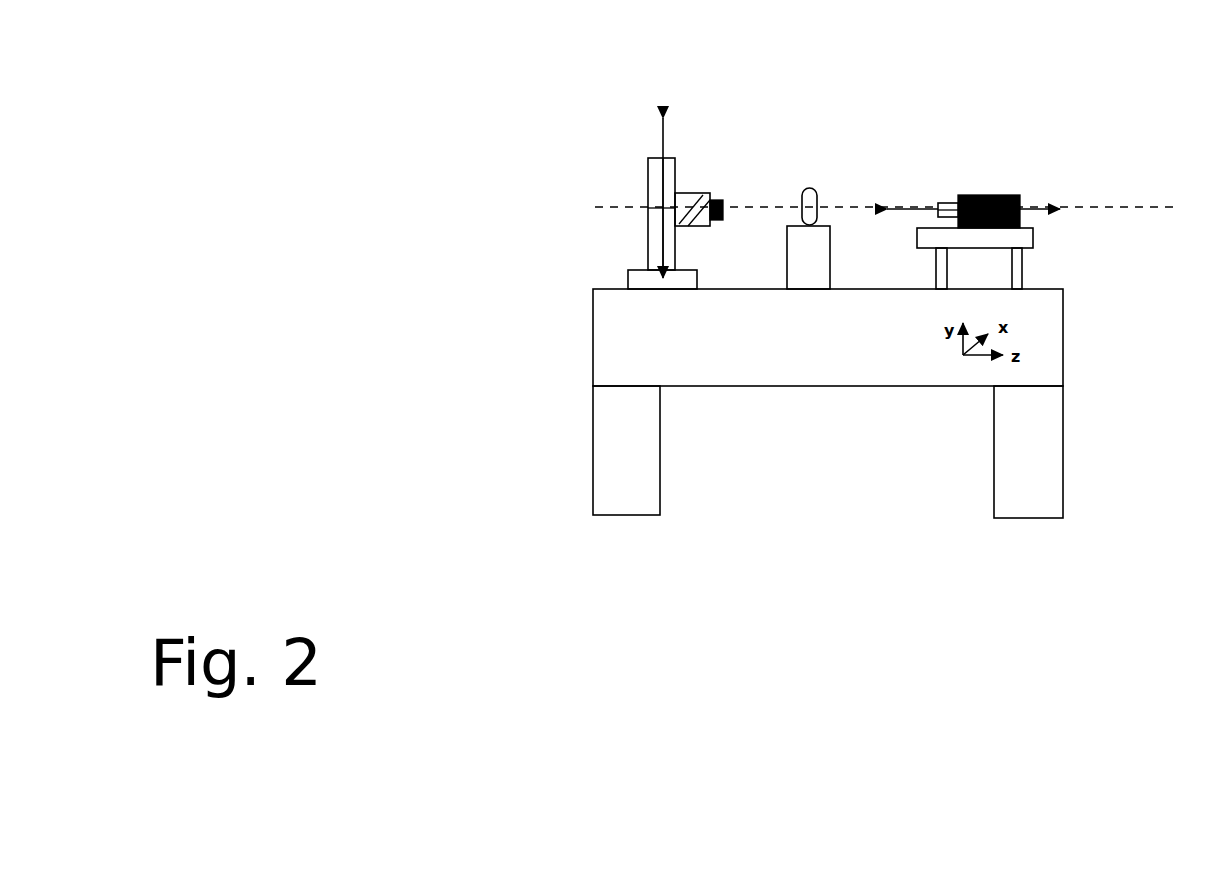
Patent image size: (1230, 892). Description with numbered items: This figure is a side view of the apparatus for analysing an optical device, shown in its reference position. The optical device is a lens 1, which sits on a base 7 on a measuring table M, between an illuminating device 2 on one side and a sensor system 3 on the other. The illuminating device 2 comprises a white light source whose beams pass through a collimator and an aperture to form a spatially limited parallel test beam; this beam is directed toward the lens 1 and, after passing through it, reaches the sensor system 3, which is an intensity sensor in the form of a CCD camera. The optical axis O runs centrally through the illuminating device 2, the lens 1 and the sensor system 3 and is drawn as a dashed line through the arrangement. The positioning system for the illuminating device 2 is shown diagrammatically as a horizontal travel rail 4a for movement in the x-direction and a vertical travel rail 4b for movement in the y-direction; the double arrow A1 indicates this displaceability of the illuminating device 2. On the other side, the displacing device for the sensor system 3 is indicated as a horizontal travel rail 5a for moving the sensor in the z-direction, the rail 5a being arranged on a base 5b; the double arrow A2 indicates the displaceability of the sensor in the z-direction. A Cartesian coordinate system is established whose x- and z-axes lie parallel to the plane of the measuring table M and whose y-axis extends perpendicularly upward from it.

The lens 1 is at (816, 177).
The illuminating device 2 is at (704, 182).
The sensor system 3 is at (981, 192).
The horizontal travel rail 4a is at (620, 263).
The vertical travel rail 4b is at (641, 178).
The horizontal travel rail 5a is at (1047, 241).
The base 5b is at (938, 274).
The base 7 is at (800, 270).
The double arrow A1 is at (665, 107).
The double arrow A2 is at (1052, 197).
The measuring table M is at (588, 356).
The optical axis O is at (1122, 192).